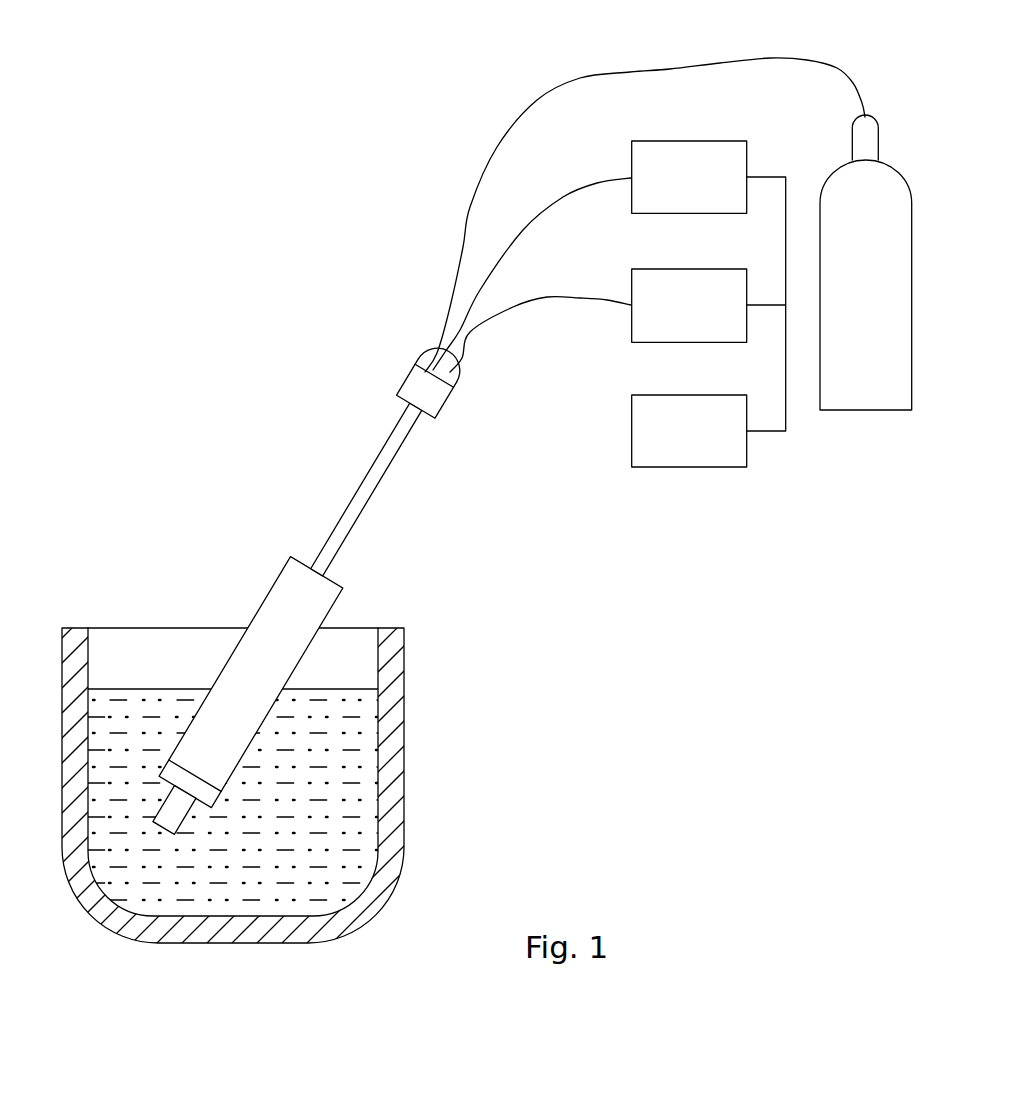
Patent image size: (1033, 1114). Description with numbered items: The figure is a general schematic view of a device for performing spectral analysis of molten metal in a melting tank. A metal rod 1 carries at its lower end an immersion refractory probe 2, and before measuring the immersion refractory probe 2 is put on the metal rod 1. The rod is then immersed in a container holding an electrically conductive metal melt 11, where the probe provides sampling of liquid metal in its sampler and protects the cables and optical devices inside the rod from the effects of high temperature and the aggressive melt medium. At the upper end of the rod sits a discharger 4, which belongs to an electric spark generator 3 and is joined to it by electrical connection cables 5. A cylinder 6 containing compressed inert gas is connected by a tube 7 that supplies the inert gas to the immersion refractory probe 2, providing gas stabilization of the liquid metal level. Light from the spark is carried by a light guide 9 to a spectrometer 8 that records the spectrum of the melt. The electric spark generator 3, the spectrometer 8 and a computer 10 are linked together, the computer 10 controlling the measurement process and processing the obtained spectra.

The metal rod 1 is at (365, 490).
The immersion refractory probe 2 is at (280, 603).
The electric spark generator 3 is at (689, 177).
The discharger 4 is at (423, 390).
The electrical connection cables 5 is at (532, 268).
The cylinder 6 is at (866, 262).
The tube 7 is at (645, 196).
The spectrometer 8 is at (689, 305).
The light guide 9 is at (540, 312).
The computer 10 is at (689, 431).
The electrically conductive metal melt 11 is at (307, 822).